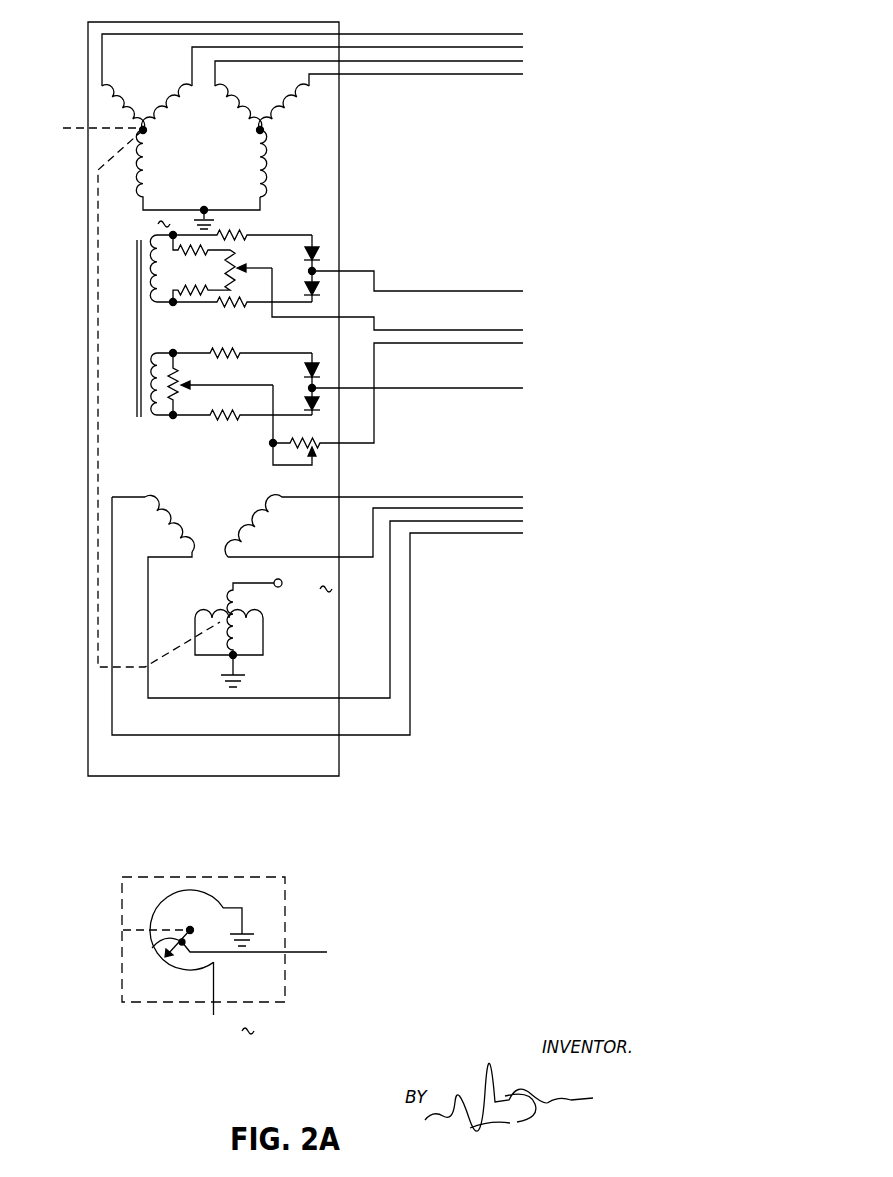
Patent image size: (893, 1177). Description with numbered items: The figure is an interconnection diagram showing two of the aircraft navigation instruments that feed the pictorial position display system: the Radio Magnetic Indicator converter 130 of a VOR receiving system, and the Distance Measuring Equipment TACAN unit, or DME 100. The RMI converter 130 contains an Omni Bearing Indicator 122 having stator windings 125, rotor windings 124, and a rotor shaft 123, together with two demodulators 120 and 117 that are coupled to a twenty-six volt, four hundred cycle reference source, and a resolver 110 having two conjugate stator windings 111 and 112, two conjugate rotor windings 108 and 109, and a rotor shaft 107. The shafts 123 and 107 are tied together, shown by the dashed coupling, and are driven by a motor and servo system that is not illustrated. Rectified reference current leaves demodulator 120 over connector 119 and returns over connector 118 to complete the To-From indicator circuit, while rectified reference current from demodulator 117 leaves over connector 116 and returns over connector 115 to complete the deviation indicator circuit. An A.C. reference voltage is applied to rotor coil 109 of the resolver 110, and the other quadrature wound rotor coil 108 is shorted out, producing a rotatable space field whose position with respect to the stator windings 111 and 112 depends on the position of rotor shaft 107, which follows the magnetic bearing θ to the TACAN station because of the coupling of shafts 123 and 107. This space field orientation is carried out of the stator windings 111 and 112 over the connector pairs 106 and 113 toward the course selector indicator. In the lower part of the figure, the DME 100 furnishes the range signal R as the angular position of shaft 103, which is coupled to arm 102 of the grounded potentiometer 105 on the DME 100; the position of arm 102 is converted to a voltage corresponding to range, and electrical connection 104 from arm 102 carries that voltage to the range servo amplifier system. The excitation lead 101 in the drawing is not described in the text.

The Distance Measuring Equipment TACAN (DME) 100 is at (254, 877).
The 26V 400Hz excitation lead 101 is at (213, 996).
The arm 102 is at (152, 948).
The shaft 103 is at (128, 930).
The electrical connection 104 is at (302, 952).
The grounded potentiometer 105 is at (160, 905).
The connector pair 106 is at (298, 735).
The rotor shaft 107 is at (138, 662).
The rotor winding 108 is at (263, 647).
The rotor winding 109 is at (227, 598).
The resolver 110 is at (317, 610).
The stator winding 111 is at (147, 499).
The stator winding 112 is at (263, 505).
The connector pair 113 is at (330, 498).
The connector 115 is at (374, 420).
The connector 116 is at (343, 388).
The demodulator 117 is at (253, 380).
The connector 118 is at (313, 317).
The connector 119 is at (357, 268).
The demodulator 120 is at (204, 275).
The Omni Bearing Indicator (OBI) 122 is at (212, 171).
The rotor shaft 123 is at (67, 127).
The rotor windings 124 is at (157, 108).
The stator windings 125 is at (277, 108).
The Radio Magnetic Indicator (RMI) Converter 130 is at (339, 180).